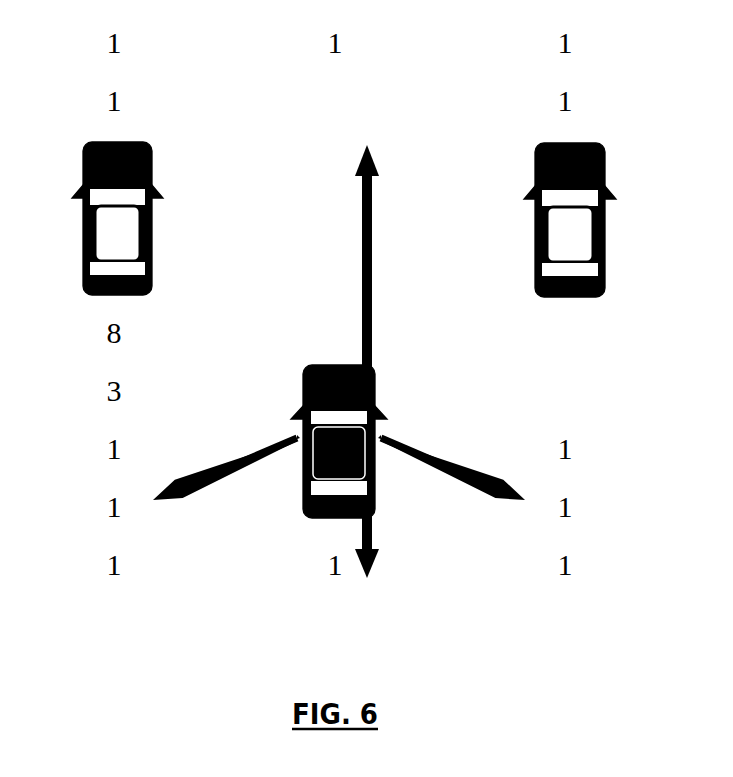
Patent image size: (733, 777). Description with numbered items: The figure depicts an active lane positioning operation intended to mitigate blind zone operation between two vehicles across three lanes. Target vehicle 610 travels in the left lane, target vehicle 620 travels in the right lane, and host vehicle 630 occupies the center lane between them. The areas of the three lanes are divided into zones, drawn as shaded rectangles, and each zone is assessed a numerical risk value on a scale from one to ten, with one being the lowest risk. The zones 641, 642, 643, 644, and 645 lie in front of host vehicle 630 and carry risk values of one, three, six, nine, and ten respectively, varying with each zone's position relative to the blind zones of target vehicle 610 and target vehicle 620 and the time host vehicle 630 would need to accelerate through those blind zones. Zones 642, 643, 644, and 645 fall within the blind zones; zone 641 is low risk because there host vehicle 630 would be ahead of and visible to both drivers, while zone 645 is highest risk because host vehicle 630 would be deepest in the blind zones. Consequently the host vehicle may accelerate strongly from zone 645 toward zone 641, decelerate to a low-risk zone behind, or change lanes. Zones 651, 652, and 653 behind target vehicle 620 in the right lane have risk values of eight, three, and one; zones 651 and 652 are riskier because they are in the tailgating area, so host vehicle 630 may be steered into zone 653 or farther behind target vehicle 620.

The target vehicle 610 is at (82, 212).
The target vehicle 620 is at (605, 210).
The host vehicle 630 is at (376, 503).
The zone 641 is at (342, 83).
The zone 642 is at (375, 138).
The zone 643 is at (408, 202).
The zone 644 is at (400, 267).
The zone 645 is at (398, 323).
The zone 651 is at (648, 343).
The zone 652 is at (648, 407).
The zone 653 is at (648, 455).